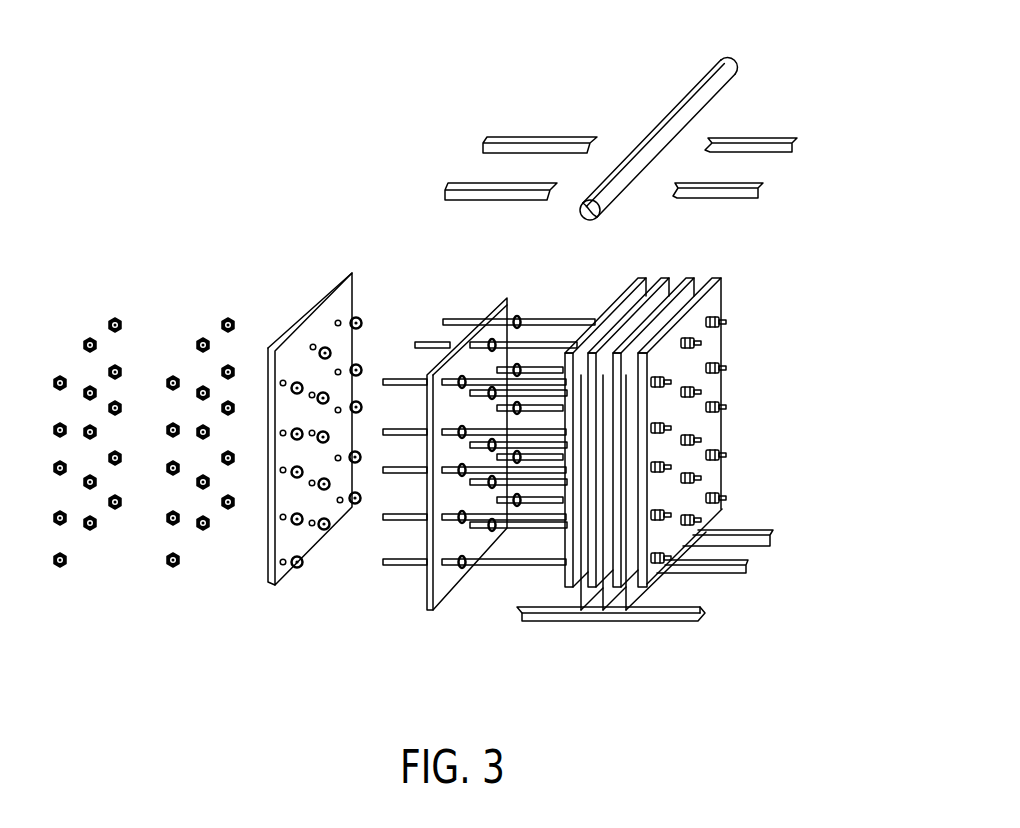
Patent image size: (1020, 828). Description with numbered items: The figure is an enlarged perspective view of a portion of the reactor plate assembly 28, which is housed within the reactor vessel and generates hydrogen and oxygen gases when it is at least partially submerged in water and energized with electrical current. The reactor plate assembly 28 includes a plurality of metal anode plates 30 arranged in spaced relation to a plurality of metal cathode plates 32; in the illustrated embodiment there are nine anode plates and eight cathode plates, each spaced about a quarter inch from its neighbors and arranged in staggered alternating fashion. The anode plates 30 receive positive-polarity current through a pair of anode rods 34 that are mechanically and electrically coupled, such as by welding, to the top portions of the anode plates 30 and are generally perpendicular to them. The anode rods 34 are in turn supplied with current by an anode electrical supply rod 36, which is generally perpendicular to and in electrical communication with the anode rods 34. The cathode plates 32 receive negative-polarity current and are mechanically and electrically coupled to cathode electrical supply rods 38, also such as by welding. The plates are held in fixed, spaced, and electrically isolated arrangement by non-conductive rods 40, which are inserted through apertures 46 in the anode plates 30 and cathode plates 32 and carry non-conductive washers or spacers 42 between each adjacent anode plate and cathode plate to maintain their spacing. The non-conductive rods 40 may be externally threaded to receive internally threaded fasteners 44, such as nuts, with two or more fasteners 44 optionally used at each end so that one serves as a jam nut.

The reactor plate assembly 28 is at (213, 58).
The anode plates 30 is at (344, 274).
The cathode plates 32 is at (428, 613).
The anode rods 34 is at (487, 144).
The anode electrical supply rod 36 is at (735, 73).
The cathode electrical supply rods 38 is at (703, 613).
The non-conductive rods 40 is at (383, 524).
The non-conductive washers or spacers 42 is at (360, 321).
The threaded fasteners 44 is at (118, 317).
The apertures 46 is at (337, 321).